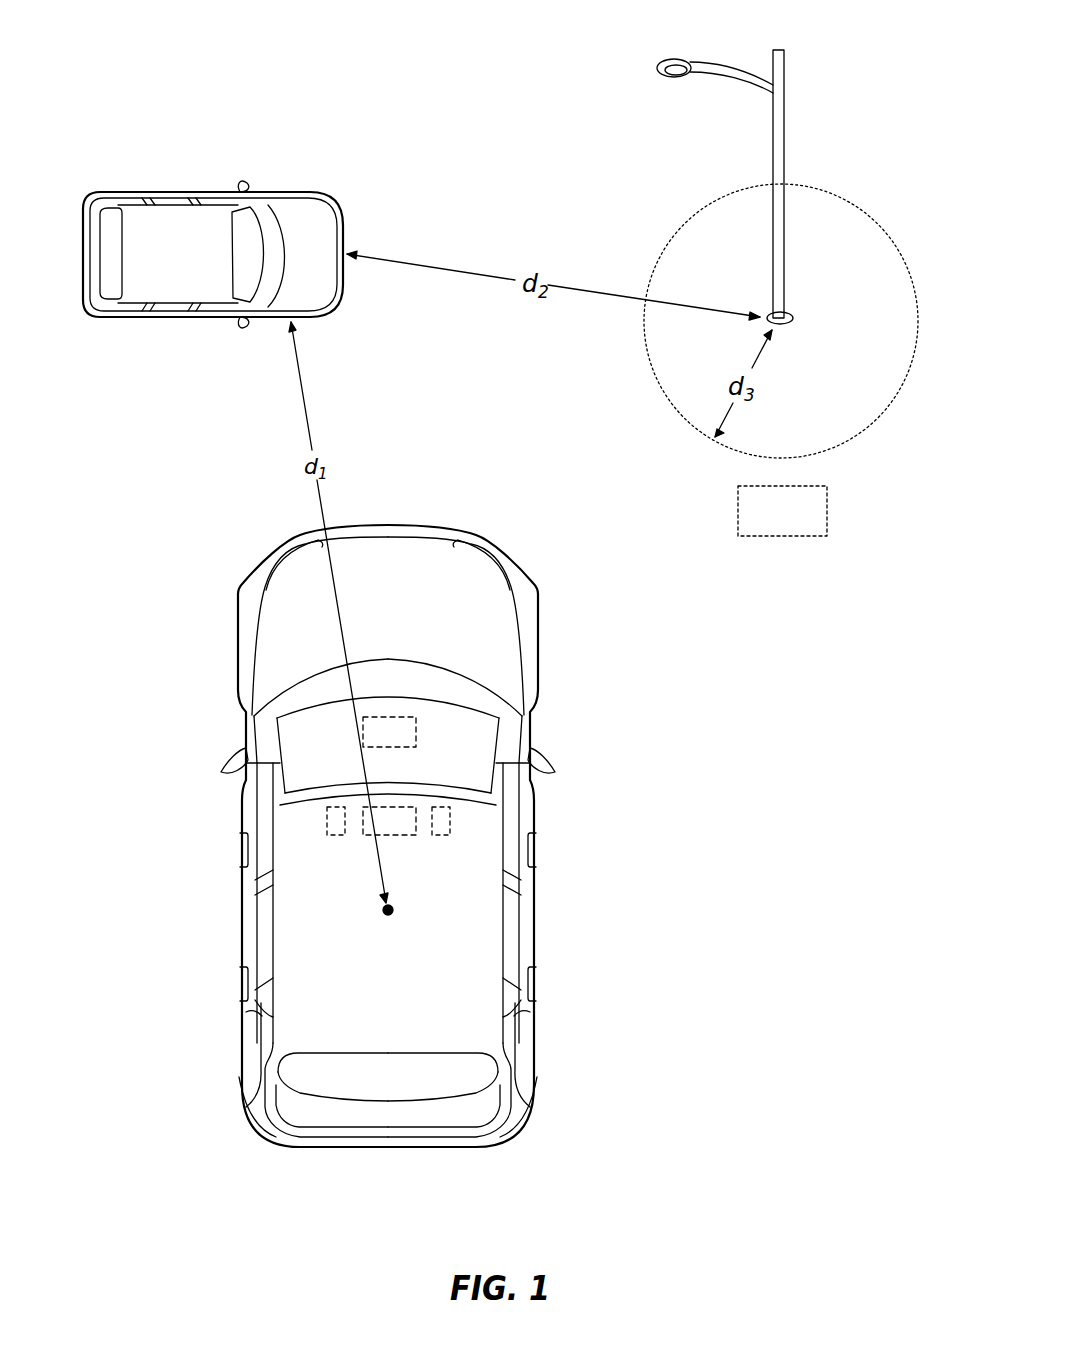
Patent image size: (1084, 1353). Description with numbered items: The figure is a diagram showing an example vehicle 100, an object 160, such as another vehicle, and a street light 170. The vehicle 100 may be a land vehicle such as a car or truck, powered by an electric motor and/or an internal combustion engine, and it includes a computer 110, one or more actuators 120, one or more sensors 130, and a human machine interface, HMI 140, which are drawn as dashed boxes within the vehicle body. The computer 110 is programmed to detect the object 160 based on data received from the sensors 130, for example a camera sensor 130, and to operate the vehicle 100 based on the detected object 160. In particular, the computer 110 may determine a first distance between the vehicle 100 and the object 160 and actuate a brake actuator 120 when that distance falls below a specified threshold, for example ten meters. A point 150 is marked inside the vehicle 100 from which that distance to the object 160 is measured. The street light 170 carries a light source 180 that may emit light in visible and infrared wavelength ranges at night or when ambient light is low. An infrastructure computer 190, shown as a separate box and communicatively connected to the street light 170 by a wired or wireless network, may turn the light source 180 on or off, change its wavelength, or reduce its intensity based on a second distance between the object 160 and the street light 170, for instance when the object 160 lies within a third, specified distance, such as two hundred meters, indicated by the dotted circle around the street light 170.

The vehicle 100 is at (395, 1006).
The computer 110 is at (363, 806).
The actuator 120 is at (326, 830).
The sensor 130 is at (452, 830).
The human machine interface 140 is at (418, 722).
The reference point 150 is at (395, 909).
The object 160 is at (183, 190).
The street light 170 is at (716, 153).
The light source 180 is at (670, 60).
The infrastructure computer 190 is at (789, 525).